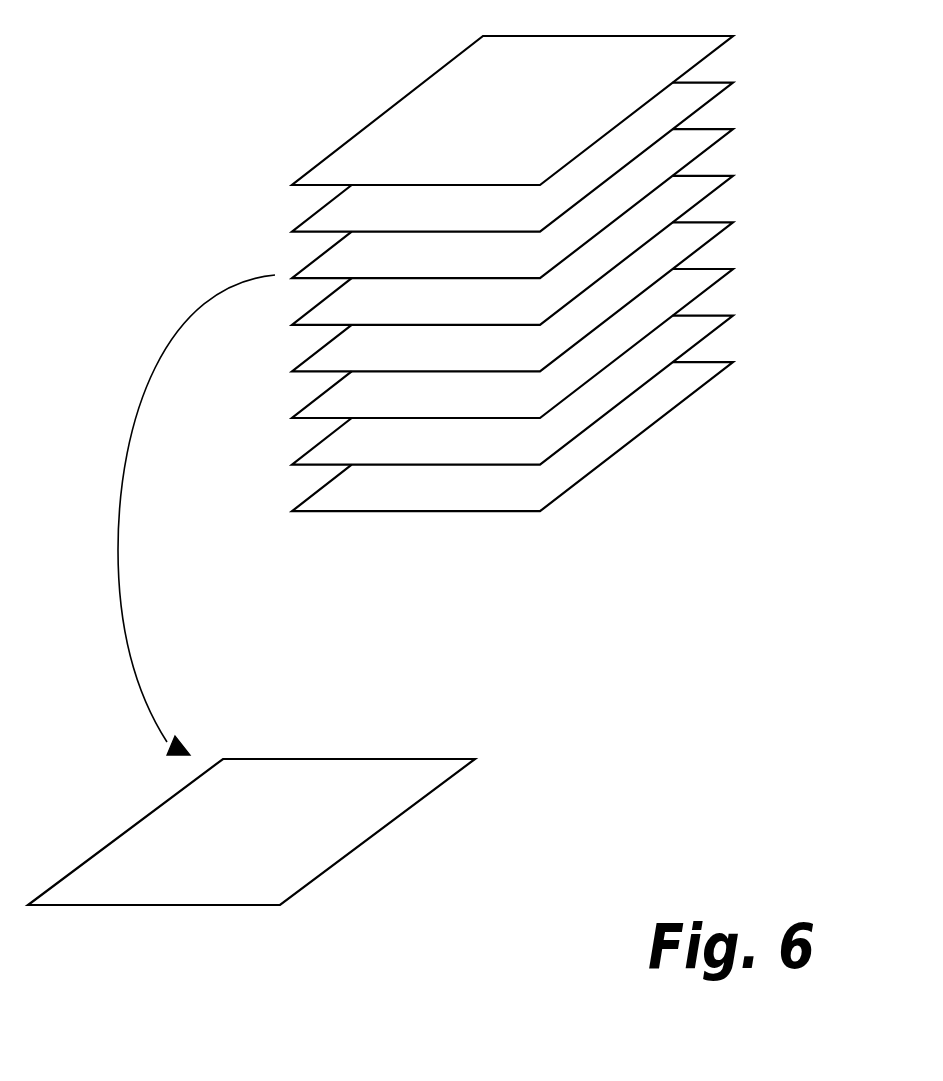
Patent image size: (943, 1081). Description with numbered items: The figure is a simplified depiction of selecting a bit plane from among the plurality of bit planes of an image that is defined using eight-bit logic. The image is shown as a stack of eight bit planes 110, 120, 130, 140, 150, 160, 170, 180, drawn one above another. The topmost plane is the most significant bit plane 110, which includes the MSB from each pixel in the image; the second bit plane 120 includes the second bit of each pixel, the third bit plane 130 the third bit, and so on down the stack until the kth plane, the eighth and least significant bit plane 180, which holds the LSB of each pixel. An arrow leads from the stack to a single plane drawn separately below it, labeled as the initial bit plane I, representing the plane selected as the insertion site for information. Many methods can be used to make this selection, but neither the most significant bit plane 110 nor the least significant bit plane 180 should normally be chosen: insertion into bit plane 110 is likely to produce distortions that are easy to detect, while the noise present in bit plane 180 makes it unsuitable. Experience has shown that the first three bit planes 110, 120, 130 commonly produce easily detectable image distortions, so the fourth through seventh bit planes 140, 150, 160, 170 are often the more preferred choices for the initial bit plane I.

The first bit plane 110 is at (733, 36).
The second bit plane 120 is at (733, 83).
The third bit plane 130 is at (733, 129).
The fourth bit plane 140 is at (733, 176).
The fifth bit plane 150 is at (733, 222).
The sixth bit plane 160 is at (733, 269).
The seventh bit plane 170 is at (733, 316).
The eighth bit plane 180 is at (733, 362).
The initial bit plane I is at (472, 758).